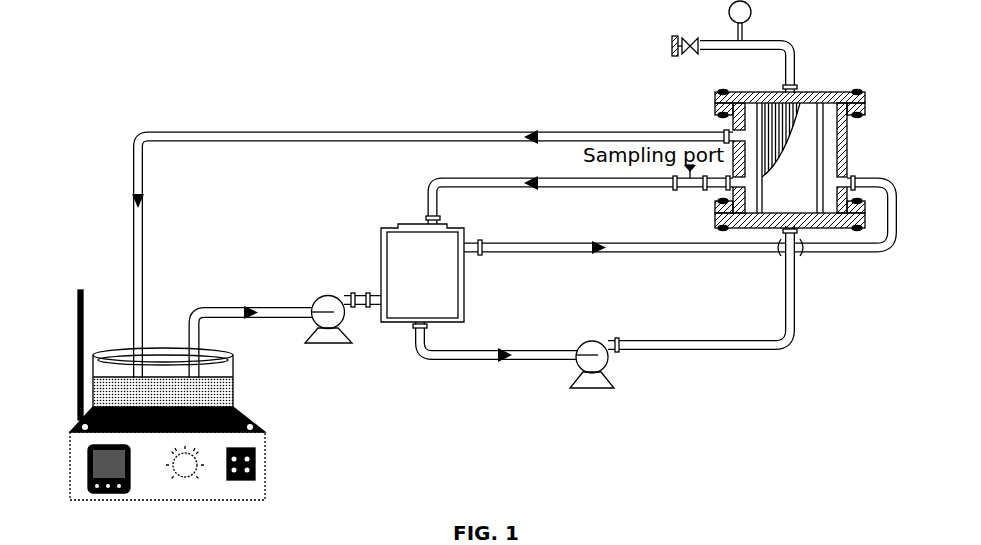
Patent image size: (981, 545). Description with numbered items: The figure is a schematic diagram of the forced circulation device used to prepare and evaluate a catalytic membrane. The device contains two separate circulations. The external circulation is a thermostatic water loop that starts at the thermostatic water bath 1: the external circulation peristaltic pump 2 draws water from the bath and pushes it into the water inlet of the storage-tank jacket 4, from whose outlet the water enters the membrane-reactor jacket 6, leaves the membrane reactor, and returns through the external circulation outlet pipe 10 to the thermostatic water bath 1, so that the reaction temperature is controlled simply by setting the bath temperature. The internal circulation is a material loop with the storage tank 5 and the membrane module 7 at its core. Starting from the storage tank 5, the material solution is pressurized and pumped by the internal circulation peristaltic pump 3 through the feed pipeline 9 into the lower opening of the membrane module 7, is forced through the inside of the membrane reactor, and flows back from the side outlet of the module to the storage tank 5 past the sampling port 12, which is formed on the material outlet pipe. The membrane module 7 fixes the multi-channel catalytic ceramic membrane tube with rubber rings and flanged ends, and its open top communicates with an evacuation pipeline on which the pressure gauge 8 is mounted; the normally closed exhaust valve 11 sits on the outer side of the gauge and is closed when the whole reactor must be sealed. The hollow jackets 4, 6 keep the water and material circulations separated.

The thermostatic water bath 1 is at (130, 398).
The external circulation peristaltic pump 2 is at (331, 346).
The internal circulation peristaltic pump 3 is at (603, 362).
The storage-tank jacket 4 is at (402, 273).
The storage tank 5 is at (405, 263).
The membrane-reactor jacket 6 is at (809, 160).
The membrane module 7 is at (797, 152).
The pressure gauge 8 is at (754, 12).
The feed pipeline 9 is at (797, 282).
The external circulation outlet pipe 10 is at (131, 169).
The normally closed exhaust valve 11 is at (681, 56).
The sampling port 12 is at (690, 184).